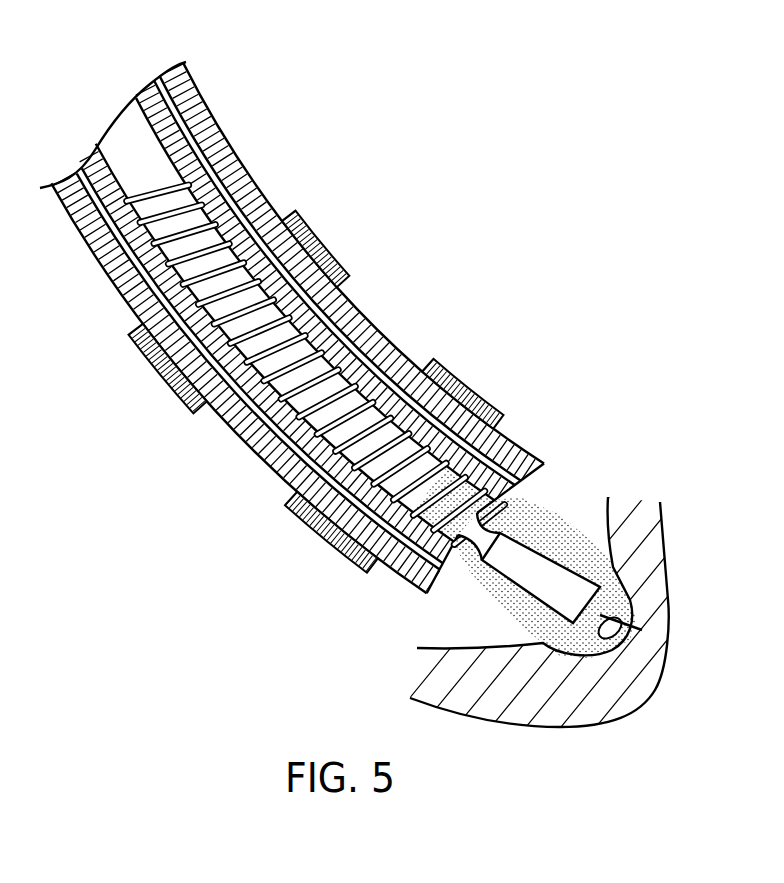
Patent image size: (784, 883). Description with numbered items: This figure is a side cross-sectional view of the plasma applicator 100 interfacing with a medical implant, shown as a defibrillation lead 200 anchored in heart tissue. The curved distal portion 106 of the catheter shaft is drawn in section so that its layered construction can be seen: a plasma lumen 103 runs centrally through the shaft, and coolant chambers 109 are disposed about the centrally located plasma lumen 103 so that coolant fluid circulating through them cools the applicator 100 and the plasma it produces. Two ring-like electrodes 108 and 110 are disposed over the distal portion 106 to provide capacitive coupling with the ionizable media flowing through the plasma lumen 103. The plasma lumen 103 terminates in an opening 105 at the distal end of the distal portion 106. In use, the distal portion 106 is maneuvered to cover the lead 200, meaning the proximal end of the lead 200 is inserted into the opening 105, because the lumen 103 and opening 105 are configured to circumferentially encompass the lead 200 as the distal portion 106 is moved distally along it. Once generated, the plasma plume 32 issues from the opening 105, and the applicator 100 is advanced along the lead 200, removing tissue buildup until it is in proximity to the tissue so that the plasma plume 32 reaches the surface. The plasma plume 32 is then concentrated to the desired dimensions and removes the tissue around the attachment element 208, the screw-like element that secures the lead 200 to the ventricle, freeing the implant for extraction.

The applicator 100 is at (238, 61).
The plasma lumen 103 is at (136, 115).
The distal portion 106 is at (238, 170).
The electrode 108 is at (327, 240).
The electrode 110 is at (470, 378).
The coolant chamber 109 is at (140, 271).
The defibrillation lead 200 is at (132, 162).
The opening 105 is at (478, 556).
The plasma plume 32 is at (520, 523).
The attachment element 208 is at (620, 643).